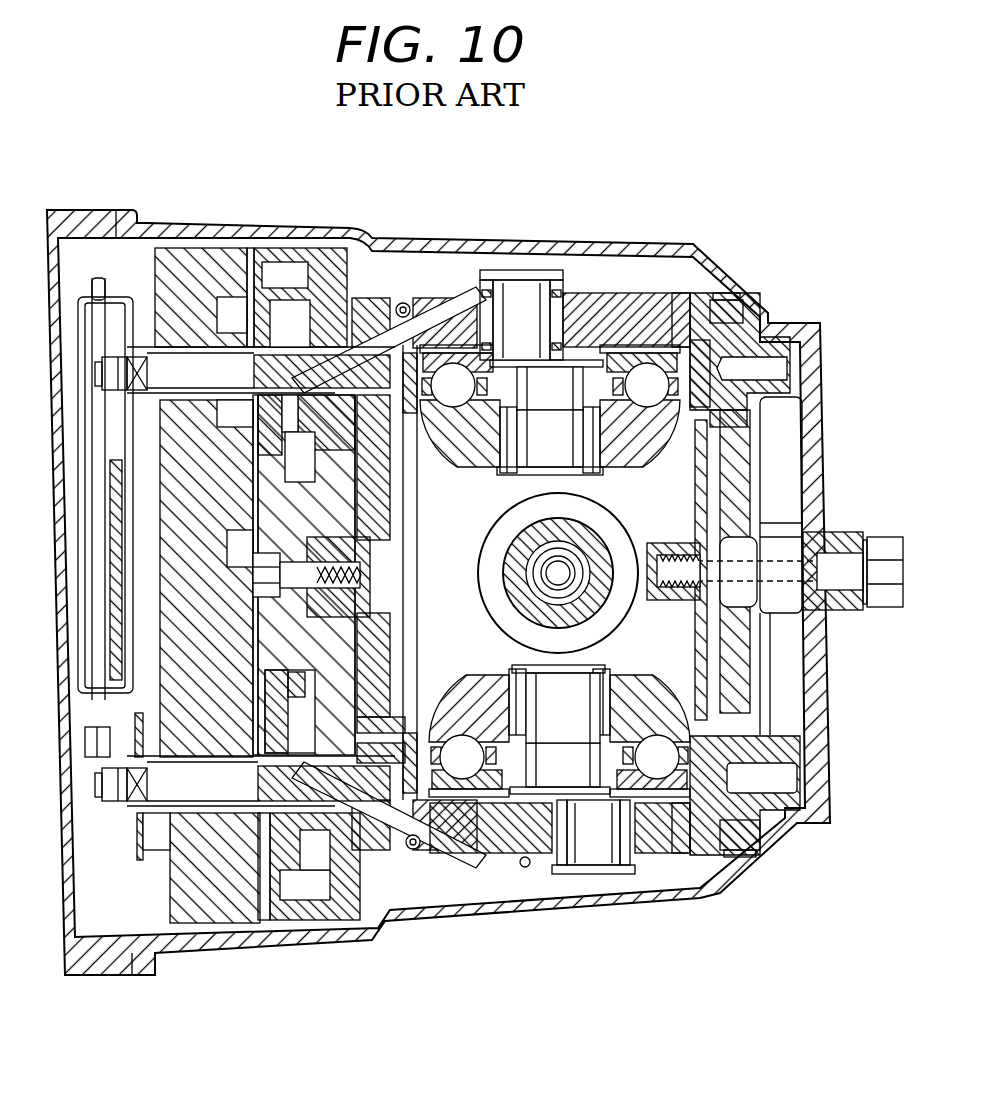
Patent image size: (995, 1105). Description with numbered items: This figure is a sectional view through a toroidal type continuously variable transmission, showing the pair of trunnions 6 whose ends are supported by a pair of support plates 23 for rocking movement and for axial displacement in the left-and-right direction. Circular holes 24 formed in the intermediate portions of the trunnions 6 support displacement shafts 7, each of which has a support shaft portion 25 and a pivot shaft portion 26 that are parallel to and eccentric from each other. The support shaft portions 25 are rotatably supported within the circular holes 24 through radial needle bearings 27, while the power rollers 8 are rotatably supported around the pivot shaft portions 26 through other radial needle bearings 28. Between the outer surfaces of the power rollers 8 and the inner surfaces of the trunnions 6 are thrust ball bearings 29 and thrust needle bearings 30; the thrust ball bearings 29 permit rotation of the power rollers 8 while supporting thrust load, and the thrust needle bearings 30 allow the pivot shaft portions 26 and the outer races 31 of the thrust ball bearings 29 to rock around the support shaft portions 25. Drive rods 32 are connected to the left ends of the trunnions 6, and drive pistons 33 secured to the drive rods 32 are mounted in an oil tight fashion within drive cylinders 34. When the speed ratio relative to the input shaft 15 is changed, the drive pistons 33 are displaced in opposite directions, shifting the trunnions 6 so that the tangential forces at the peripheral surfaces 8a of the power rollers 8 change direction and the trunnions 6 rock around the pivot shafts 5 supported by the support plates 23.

The pivot shaft 5 is at (372, 250).
The trunnion 6 is at (700, 300).
The displacement shaft 7 is at (576, 375).
The power roller 8 is at (760, 490).
The peripheral surface of power roller 8a is at (762, 446).
The input shaft 15 is at (600, 600).
The support plate 23 is at (420, 660).
The circular hole 24 is at (490, 272).
The support shaft portion 25 is at (520, 290).
The pivot shaft portion 26 is at (570, 450).
The radial needle bearing 27 is at (545, 310).
The radial needle bearing 28 is at (510, 432).
The thrust ball bearing 29 is at (635, 415).
The thrust needle bearing 30 is at (625, 300).
The outer race 31 is at (682, 330).
The drive rod 32 is at (190, 365).
The drive piston 33 is at (292, 265).
The drive cylinder 34 is at (250, 300).